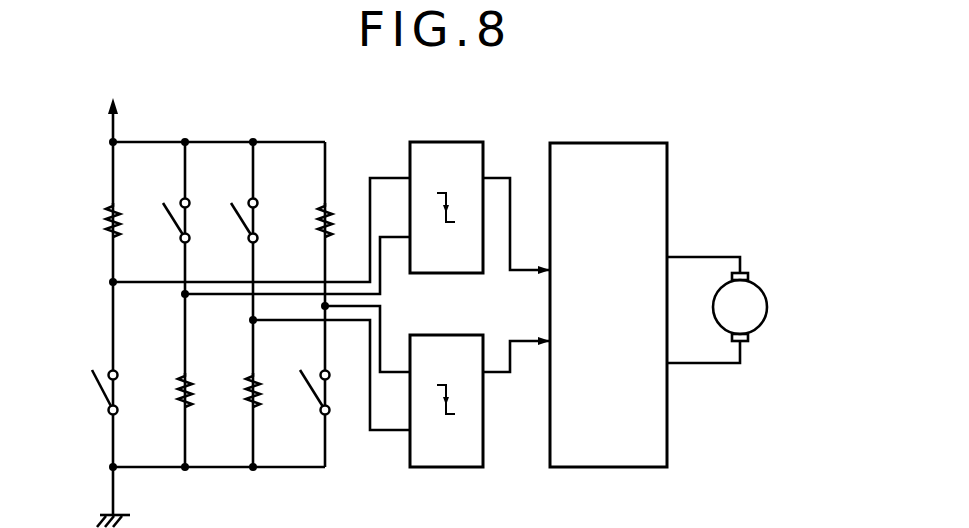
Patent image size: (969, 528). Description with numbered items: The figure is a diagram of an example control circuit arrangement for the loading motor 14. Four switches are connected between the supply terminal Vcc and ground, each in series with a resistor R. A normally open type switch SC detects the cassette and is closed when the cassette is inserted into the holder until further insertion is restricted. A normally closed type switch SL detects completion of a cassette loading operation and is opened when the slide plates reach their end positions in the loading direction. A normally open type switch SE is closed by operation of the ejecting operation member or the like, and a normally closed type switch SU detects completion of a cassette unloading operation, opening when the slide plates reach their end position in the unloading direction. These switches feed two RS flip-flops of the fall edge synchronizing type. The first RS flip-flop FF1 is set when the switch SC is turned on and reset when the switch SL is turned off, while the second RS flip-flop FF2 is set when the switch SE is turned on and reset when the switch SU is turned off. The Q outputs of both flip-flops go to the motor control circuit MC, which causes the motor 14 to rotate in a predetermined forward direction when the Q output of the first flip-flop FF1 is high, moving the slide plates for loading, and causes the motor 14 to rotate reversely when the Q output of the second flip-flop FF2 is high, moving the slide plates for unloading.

The loading motor 14 is at (767, 307).
The first RS flip-flop FF1 is at (447, 142).
The second RS flip-flop FF2 is at (452, 335).
The motor control circuit MC is at (631, 143).
The normally closed type switch SL is at (184, 220).
The normally closed type switch SU is at (252, 220).
The normally open type switch SC is at (116, 388).
The normally open type switch SE is at (323, 388).
The resistor R is at (123, 222).
The supply voltage terminal Vcc is at (113, 103).